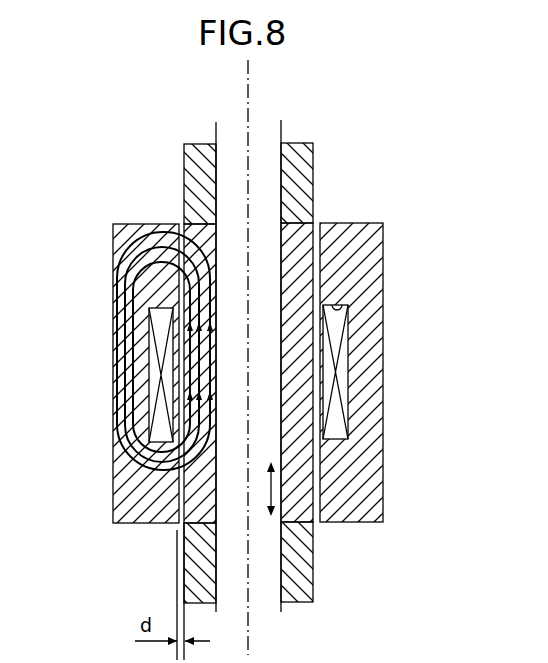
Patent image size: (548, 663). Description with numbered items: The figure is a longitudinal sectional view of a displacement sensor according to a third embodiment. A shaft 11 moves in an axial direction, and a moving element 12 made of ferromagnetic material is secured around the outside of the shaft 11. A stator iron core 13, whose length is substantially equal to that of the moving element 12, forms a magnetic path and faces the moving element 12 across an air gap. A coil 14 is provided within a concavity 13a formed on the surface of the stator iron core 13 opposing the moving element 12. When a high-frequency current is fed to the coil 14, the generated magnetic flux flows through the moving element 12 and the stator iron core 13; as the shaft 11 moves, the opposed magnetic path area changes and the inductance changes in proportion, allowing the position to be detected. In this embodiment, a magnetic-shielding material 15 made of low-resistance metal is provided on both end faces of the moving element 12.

The shaft 11 is at (290, 154).
The moving element 12 is at (297, 233).
The stator iron core 13 is at (368, 229).
The concavity 13a is at (349, 304).
The coil 14 is at (345, 362).
The magnetic-shielding material 15 is at (190, 164).